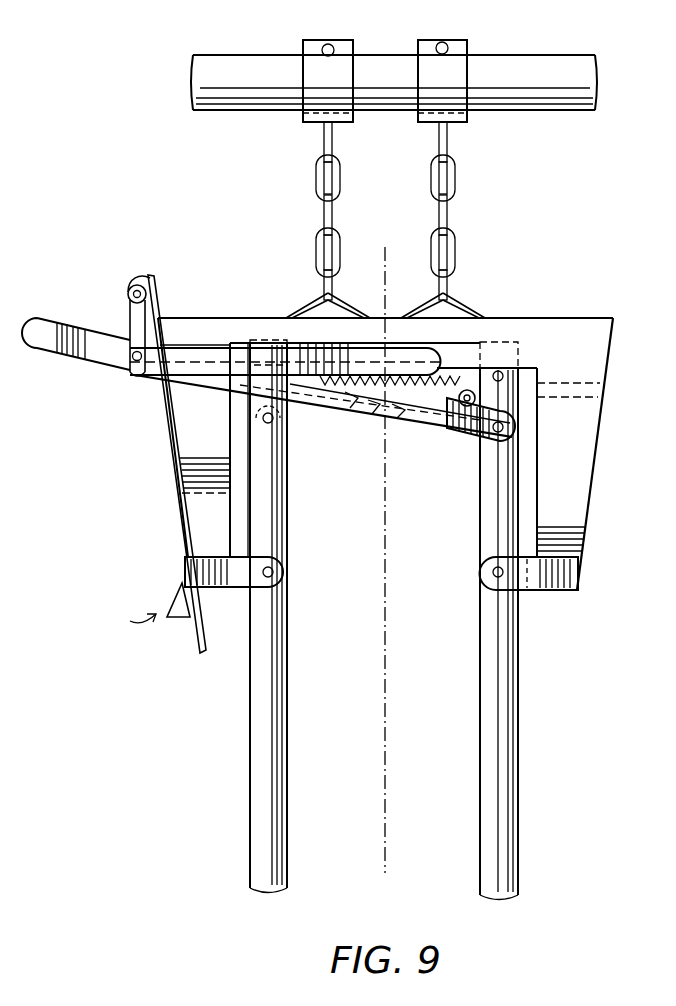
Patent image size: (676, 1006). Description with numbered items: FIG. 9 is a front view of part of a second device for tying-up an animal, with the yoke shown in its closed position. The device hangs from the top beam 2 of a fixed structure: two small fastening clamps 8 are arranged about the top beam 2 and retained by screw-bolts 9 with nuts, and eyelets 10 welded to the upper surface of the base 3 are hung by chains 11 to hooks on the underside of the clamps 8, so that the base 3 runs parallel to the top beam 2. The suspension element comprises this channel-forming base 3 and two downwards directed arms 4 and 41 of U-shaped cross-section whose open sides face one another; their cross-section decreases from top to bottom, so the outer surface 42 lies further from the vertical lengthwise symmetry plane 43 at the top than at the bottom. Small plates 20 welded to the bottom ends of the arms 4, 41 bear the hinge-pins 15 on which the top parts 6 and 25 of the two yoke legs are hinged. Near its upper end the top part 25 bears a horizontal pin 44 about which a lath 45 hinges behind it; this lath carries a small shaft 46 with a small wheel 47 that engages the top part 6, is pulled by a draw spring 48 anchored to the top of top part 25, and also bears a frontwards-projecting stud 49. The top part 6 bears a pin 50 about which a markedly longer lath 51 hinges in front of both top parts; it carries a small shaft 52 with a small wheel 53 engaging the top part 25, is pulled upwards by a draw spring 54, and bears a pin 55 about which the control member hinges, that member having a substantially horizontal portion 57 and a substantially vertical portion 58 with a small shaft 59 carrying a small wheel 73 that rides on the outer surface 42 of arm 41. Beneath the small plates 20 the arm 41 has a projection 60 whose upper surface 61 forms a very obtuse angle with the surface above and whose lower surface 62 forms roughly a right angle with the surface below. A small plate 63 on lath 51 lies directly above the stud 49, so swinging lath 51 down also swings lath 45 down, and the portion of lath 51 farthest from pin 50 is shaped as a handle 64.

The top beam 2 is at (510, 70).
The base 3 is at (526, 326).
The arm 4 is at (564, 466).
The top part of yoke leg 6 is at (497, 790).
The small fastening clamp 8 is at (318, 44).
The screw-bolt 9 is at (440, 46).
The eyelet 10 is at (456, 305).
The chain 11 is at (456, 189).
The hinge-pin 15 is at (483, 572).
The small plate 20 is at (548, 581).
The top part of yoke leg 25 is at (272, 776).
The arm 41 is at (190, 454).
The outer surface 42 is at (169, 430).
The vertical lengthwise symmetry plane 43 is at (384, 800).
The horizontal pin 44 is at (258, 423).
The lath 45 is at (300, 420).
The small shaft 46 is at (476, 399).
The small wheel 47 is at (480, 357).
The draw spring 48 is at (399, 420).
The stud 49 is at (375, 420).
The pin 50 is at (516, 428).
The lath 51 is at (438, 426).
The small shaft 52 is at (328, 343).
The small wheel 53 is at (243, 403).
The draw spring 54 is at (457, 365).
The pin 55 is at (130, 374).
The substantially horizontal portion 57 is at (399, 356).
The substantially vertical portion 58 is at (131, 322).
The small shaft 59 is at (127, 296).
The projection 60 is at (140, 610).
The upper surface 61 is at (185, 575).
The lower surface 62 is at (179, 617).
The small plate 63 is at (352, 415).
The handle 64 is at (46, 336).
The small wheel 73 is at (143, 283).